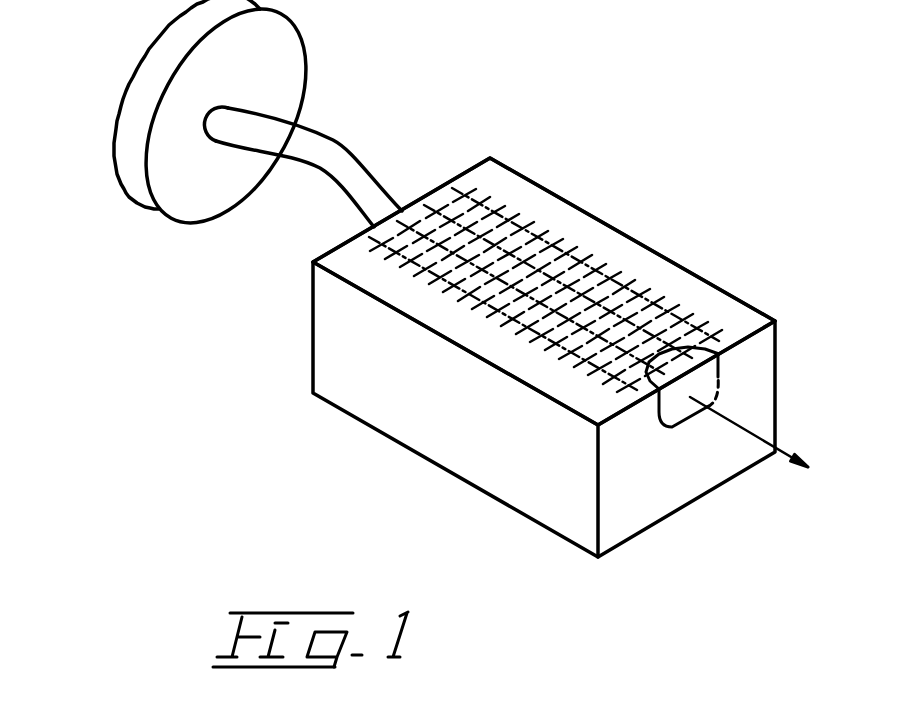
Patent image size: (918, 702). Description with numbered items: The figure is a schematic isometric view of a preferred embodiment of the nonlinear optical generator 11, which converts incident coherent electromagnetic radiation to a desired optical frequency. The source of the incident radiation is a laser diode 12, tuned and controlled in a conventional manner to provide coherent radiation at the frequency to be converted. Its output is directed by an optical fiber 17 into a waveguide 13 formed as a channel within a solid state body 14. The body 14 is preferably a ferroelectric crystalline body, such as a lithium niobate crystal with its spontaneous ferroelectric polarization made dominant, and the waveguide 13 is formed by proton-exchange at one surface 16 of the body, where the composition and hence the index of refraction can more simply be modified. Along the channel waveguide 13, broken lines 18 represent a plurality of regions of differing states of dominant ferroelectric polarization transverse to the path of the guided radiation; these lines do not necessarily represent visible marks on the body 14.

The nonlinear optical generator 11 is at (578, 317).
The laser diode 12 is at (145, 198).
The waveguide 13 is at (690, 397).
The solid state body 14 is at (415, 430).
The surface 16 is at (690, 292).
The optical fiber 17 is at (318, 145).
The broken lines 18 is at (460, 198).